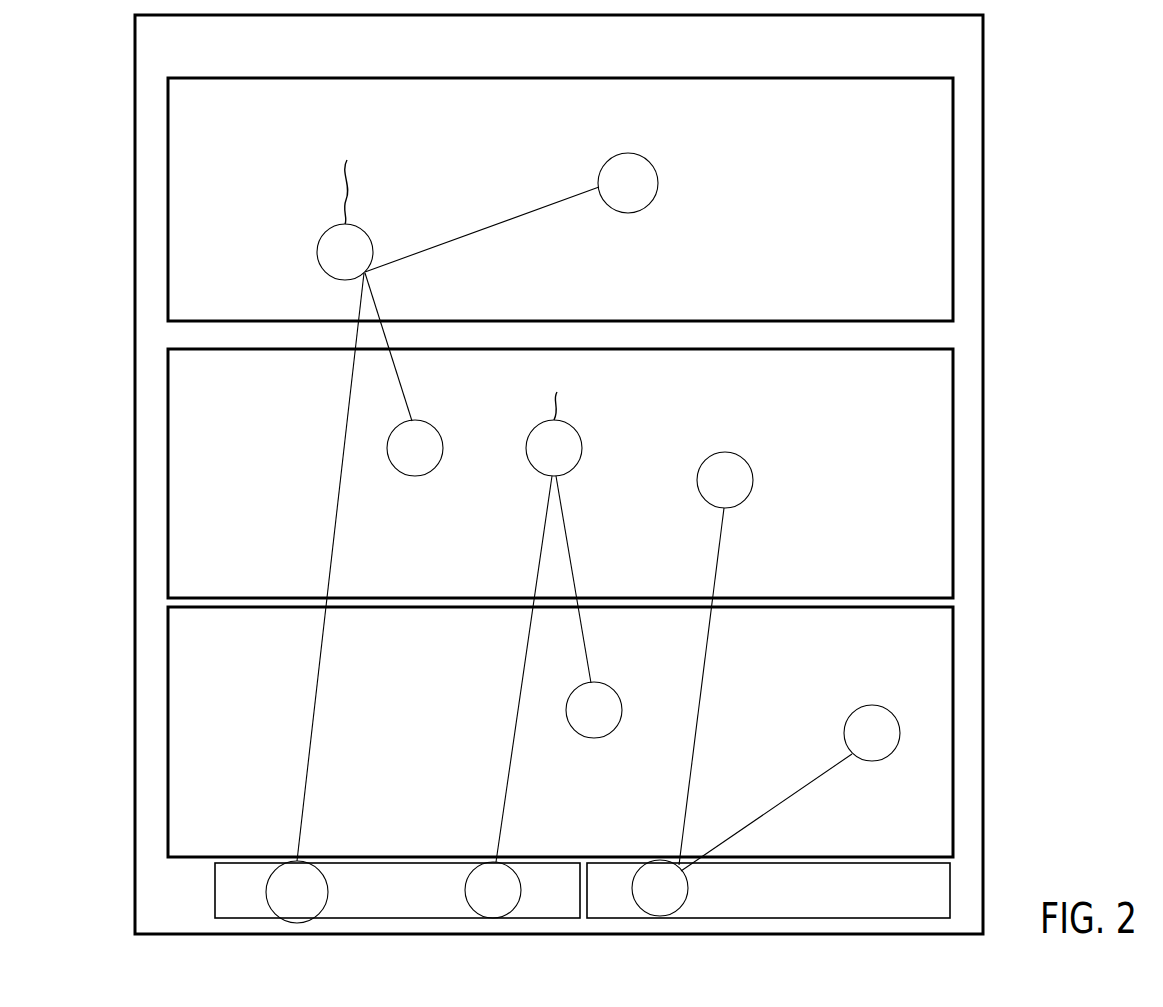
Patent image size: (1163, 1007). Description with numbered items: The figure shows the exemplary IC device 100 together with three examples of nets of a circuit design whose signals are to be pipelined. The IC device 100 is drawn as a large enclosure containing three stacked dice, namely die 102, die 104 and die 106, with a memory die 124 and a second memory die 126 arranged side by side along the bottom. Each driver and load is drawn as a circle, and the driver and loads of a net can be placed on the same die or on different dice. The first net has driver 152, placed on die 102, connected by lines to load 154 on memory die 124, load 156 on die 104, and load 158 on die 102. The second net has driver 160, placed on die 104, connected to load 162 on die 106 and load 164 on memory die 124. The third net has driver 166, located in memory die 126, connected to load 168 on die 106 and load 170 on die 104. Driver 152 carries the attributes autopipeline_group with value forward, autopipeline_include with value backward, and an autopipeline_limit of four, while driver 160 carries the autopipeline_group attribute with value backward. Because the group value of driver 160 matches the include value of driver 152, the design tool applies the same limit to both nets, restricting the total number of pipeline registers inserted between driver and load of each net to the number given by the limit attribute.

The IC device 100 is at (236, 48).
The die 102 is at (205, 206).
The die 104 is at (205, 480).
The die 106 is at (205, 738).
The memory die 124 is at (450, 900).
The memory die 126 is at (820, 900).
The driver 152 is at (360, 274).
The load 154 is at (312, 914).
The load 156 is at (430, 470).
The load 158 is at (643, 205).
The driver 160 is at (569, 470).
The load 162 is at (609, 732).
The load 164 is at (508, 912).
The driver 166 is at (675, 910).
The load 168 is at (887, 755).
The load 170 is at (740, 502).